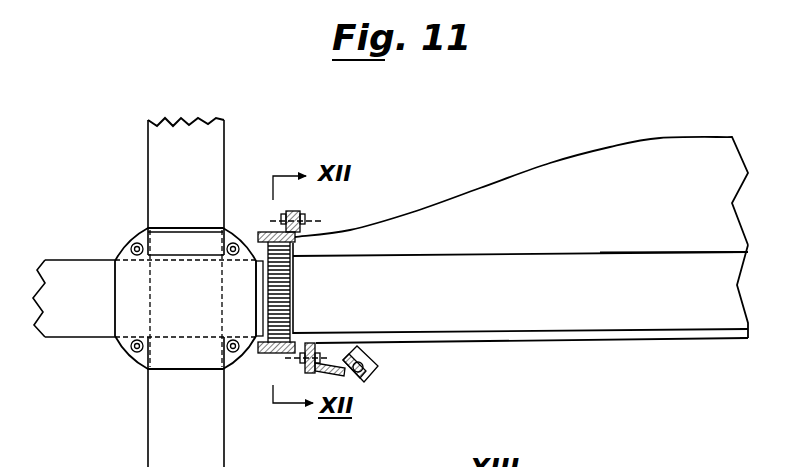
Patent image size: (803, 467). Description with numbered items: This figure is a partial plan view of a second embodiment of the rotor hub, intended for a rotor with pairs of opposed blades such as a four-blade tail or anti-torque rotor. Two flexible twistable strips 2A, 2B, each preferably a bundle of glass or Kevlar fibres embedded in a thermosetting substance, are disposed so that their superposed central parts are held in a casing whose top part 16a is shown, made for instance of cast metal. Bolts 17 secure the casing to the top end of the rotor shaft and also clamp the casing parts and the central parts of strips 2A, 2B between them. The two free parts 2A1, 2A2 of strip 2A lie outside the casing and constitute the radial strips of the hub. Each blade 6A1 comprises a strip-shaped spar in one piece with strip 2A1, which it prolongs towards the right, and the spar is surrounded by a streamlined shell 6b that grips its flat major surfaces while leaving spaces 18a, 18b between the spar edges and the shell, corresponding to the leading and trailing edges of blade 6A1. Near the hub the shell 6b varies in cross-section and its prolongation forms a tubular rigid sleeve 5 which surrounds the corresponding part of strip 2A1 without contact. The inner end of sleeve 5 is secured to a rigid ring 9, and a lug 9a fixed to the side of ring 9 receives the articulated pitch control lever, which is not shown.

The flexible twistable strip 2B is at (186, 173).
The free part of strip 2A2 is at (68, 278).
The casing part 16a is at (138, 310).
The bolts 17 is at (136, 243).
The rigid ring 9 is at (262, 233).
The lug 9a is at (305, 377).
The flexible twistable strip 2A is at (432, 302).
The free part of strip 2A1 is at (540, 273).
The tubular rigid sleeve 5 is at (419, 208).
The blade 6A1 is at (660, 134).
The space 18a is at (680, 202).
The streamlined shell 6b is at (608, 341).
The space 18b is at (691, 334).